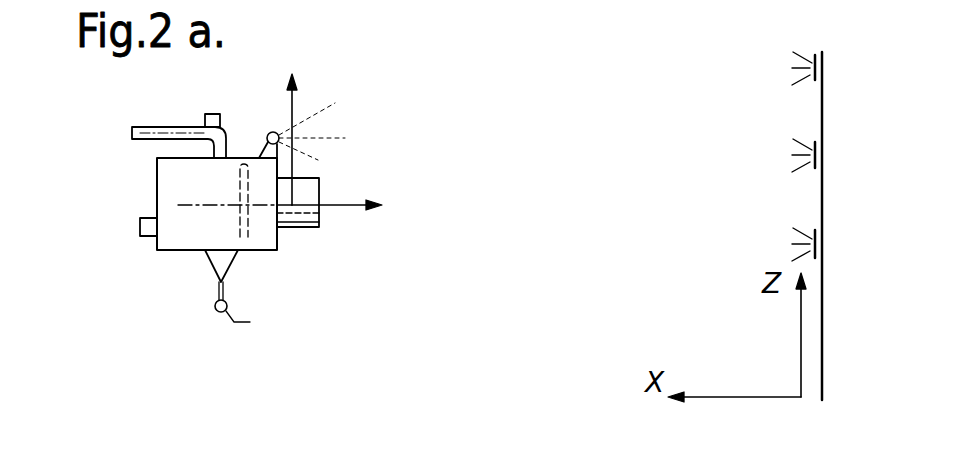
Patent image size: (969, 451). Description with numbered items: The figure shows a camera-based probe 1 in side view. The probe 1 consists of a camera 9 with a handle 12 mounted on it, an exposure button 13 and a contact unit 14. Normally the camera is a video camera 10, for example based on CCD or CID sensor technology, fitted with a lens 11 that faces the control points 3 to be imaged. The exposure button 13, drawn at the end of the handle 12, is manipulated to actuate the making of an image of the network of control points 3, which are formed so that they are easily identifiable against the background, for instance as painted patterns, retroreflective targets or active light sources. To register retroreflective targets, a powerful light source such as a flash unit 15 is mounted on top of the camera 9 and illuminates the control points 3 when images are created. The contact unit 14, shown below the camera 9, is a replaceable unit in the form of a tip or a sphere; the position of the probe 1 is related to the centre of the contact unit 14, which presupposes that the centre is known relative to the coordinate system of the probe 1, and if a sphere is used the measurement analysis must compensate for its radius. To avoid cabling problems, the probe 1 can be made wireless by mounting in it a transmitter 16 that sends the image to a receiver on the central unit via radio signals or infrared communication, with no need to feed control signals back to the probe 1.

The probe 1 is at (138, 178).
The control points 3 is at (812, 80).
The camera 9 is at (172, 190).
The video camera 10 is at (252, 232).
The lens 11 is at (325, 178).
The handle 12 is at (157, 127).
The exposure button 13 is at (214, 113).
The contact unit 14 is at (214, 305).
The flash unit 15 is at (270, 128).
The transmitter 16 is at (143, 234).